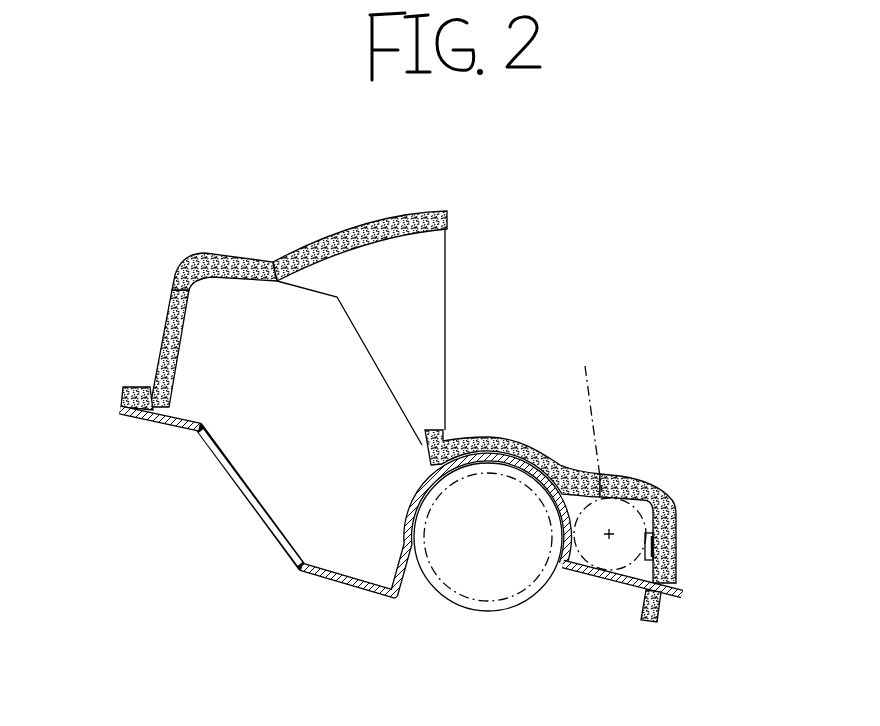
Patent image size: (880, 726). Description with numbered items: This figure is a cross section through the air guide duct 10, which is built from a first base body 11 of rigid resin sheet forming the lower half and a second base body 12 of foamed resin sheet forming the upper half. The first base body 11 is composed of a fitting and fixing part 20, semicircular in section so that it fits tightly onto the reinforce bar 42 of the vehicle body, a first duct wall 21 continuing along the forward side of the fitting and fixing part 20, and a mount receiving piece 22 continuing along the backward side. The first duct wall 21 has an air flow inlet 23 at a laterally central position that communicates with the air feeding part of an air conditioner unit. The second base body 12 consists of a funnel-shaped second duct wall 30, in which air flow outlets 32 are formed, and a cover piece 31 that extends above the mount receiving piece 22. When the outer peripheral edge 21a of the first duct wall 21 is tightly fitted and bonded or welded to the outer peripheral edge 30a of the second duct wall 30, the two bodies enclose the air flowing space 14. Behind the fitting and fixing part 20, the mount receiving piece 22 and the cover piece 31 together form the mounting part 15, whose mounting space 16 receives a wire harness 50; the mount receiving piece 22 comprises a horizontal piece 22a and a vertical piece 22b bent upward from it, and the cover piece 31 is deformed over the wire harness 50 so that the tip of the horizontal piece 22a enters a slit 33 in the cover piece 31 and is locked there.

The air guide duct 10 is at (348, 218).
The first base body 11 is at (335, 559).
The second base body 12 is at (167, 318).
The air flowing space 14 is at (285, 416).
The mounting part 15 is at (622, 470).
The mounting space 16 is at (610, 533).
The fitting and fixing part 20 is at (497, 460).
The first duct wall 21 is at (362, 592).
The outer peripheral edge 21a is at (133, 413).
The mount receiving piece 22 is at (670, 638).
The horizontal piece 22a is at (683, 592).
The vertical piece 22b is at (653, 537).
The air flow inlet 23 is at (285, 558).
The second duct wall 30 is at (198, 250).
The outer peripheral edge 30a is at (137, 387).
The cover piece 31 is at (673, 507).
The air flow outlet 32 is at (447, 228).
The slit 33 is at (667, 577).
The reinforce bar 42 is at (468, 610).
The wire harness 50 is at (585, 415).